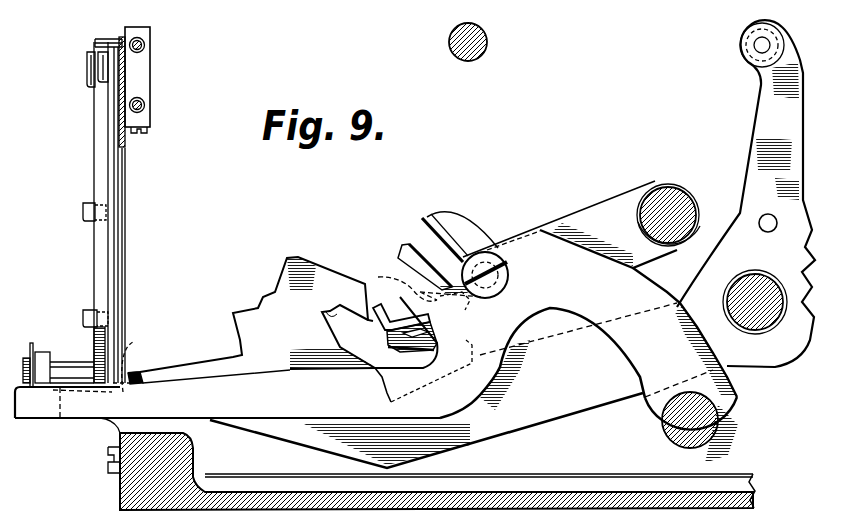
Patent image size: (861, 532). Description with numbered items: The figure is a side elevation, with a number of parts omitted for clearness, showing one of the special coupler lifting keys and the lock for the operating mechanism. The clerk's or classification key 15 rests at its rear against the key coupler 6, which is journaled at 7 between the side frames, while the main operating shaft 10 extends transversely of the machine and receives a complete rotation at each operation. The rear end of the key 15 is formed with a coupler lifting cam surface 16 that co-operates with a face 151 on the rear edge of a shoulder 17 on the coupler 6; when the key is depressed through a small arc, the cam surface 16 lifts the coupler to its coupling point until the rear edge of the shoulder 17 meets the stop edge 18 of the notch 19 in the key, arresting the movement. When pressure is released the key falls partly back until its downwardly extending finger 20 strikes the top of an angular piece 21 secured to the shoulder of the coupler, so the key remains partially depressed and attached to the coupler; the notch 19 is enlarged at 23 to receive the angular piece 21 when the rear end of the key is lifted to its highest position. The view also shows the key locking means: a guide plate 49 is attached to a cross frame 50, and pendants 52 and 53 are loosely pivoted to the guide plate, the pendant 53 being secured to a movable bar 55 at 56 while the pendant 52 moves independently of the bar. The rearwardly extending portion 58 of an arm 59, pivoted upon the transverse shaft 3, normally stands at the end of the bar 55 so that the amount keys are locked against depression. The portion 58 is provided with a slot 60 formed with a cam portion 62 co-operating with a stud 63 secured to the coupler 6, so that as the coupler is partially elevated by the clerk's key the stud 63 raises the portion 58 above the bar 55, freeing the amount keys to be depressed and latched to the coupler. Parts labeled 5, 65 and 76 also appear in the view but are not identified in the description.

The transverse shaft 3 is at (718, 416).
The lever 5 is at (733, 290).
The key coupler 6 is at (580, 223).
The coupler journal 7 is at (658, 203).
The main operating shaft 10 is at (485, 52).
The clerk's key 15 is at (550, 353).
The coupler lifting cam surface 16 is at (466, 346).
The shoulder 17 is at (390, 318).
The stop edge 18 is at (385, 381).
The notch 19 is at (410, 380).
The downwardly extending finger 20 is at (366, 316).
The angular piece 21 is at (386, 327).
The notch enlargement 23 is at (328, 315).
The guide plate 49 is at (120, 296).
The cross frame 50 is at (148, 118).
The pendant 52 is at (100, 242).
The pendant 53 is at (114, 280).
The movable bar 55 is at (45, 350).
The pendant attachment point 56 is at (134, 345).
The rearwardly extending portion 58 is at (227, 410).
The arm 59 is at (307, 395).
The slot 60 is at (432, 247).
The cam portion 62 is at (463, 259).
The stud 63 is at (510, 275).
The lug 65 is at (85, 211).
The base 76 is at (523, 492).
The shoulder face 151 is at (395, 284).